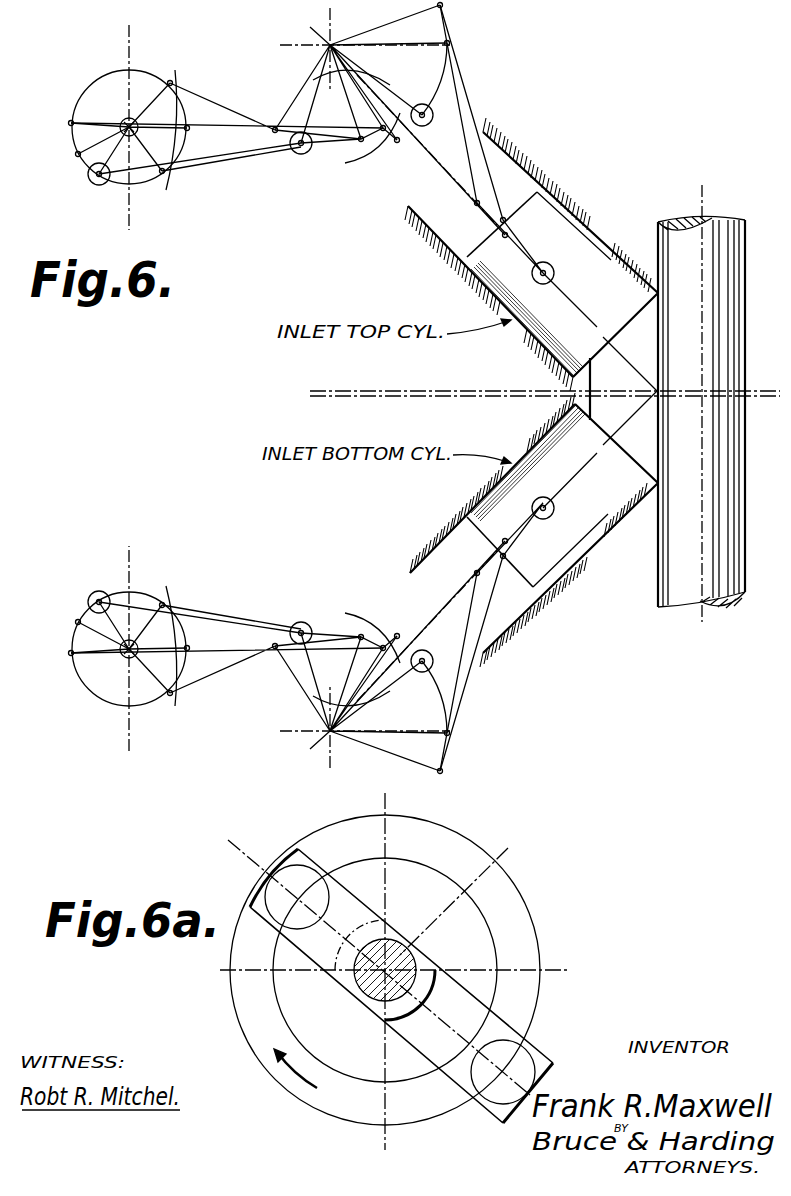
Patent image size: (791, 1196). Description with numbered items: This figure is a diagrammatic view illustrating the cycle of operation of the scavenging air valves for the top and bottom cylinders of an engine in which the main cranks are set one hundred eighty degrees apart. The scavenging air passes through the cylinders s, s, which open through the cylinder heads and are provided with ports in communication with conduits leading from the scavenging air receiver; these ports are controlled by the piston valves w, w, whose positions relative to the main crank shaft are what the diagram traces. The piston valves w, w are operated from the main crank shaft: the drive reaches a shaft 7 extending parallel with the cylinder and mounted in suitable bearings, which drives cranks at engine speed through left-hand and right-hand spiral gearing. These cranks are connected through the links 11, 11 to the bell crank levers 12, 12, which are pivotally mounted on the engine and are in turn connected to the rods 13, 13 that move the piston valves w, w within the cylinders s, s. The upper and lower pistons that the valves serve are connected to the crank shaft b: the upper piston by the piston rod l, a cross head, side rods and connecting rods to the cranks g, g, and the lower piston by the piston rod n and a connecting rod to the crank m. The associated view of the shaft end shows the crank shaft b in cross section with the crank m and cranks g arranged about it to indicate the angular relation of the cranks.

In FIG. 6, the shaft 7 is at (123, 118).
In FIG. 6, the links 11 is at (146, 172).
In FIG. 6, the bell crank levers 12 is at (322, 78).
In FIG. 6, the rods 13 is at (442, 137).
In FIG. 6, the cylinders s is at (522, 153).
In FIG. 6, the piston valves w is at (547, 225).
In FIG. 6, the piston rod l is at (660, 222).
In FIG. 6, the piston rod n is at (665, 590).
In FIG. 6A, the crank m is at (430, 1055).
In FIG. 6A, the cranks g is at (348, 897).
In FIG. 6A, the crank shaft b is at (353, 995).